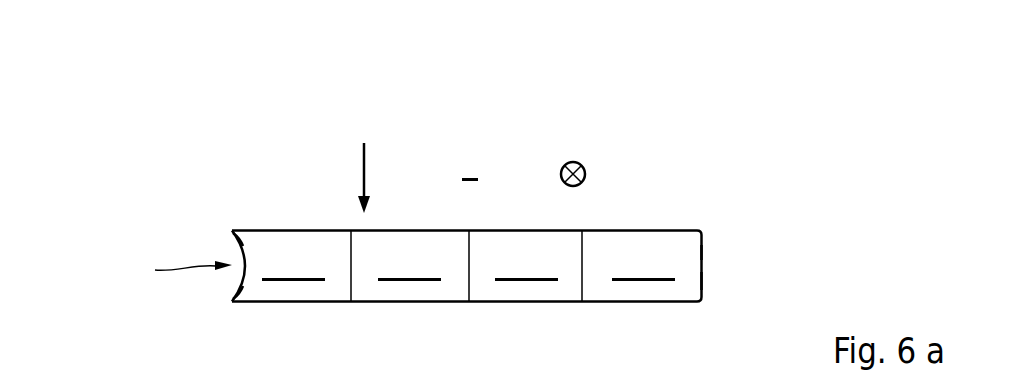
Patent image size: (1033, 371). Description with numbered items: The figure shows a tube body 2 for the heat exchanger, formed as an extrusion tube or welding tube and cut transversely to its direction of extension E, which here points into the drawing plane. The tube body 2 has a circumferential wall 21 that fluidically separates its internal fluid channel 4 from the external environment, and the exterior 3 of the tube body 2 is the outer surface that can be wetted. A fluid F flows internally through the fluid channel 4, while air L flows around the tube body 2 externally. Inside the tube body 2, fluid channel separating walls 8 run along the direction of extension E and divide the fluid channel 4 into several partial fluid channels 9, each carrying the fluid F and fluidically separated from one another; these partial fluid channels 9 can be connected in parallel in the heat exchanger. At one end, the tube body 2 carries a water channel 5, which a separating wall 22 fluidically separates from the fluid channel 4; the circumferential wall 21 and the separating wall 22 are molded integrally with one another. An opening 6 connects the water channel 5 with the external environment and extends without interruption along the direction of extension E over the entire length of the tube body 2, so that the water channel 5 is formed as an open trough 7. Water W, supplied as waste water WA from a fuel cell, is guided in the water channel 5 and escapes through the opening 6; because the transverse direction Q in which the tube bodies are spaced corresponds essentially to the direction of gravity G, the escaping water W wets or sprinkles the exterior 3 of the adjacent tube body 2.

The tube body 2 is at (764, 212).
The exterior 3 is at (703, 281).
The fluid channel 4 is at (468, 267).
The water channel 5 is at (145, 269).
The opening 6 is at (232, 289).
The open trough 7 is at (236, 241).
The fluid channel separating wall 8 is at (351, 287).
The partial fluid channels 9 is at (468, 267).
The circumferential wall 21 is at (717, 252).
The separating wall 22 is at (245, 285).
The fluid F is at (468, 267).
The water W is at (145, 269).
The waste water WA is at (145, 269).
The transverse direction Q is at (316, 178).
The direction of gravity G is at (364, 172).
The air L is at (470, 167).
The direction of extension E is at (586, 174).